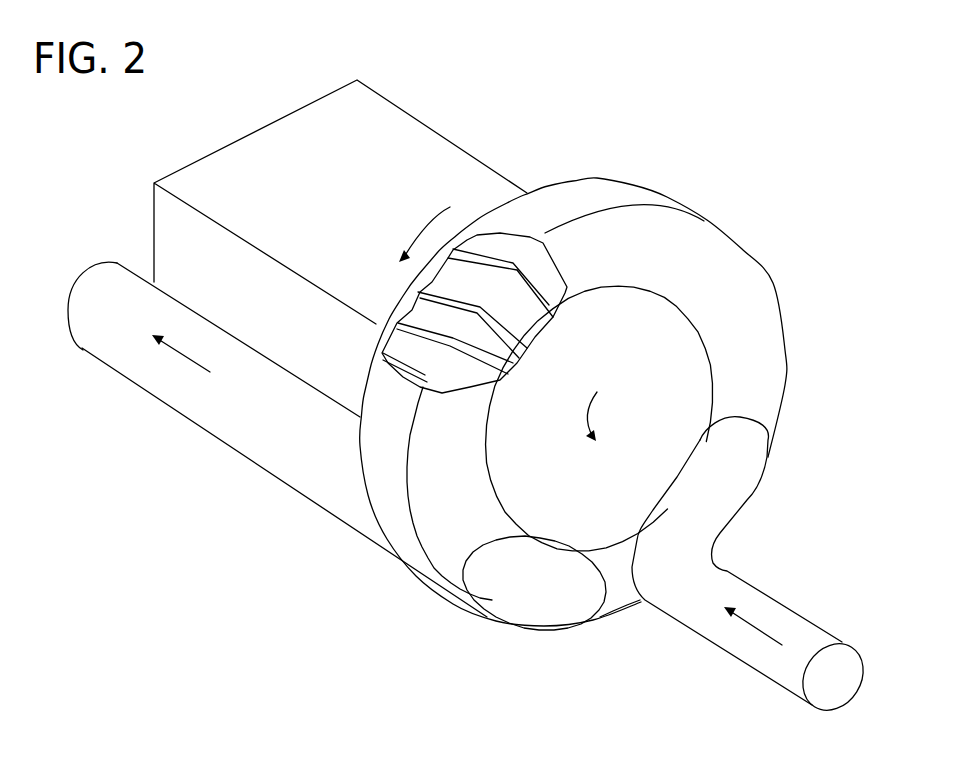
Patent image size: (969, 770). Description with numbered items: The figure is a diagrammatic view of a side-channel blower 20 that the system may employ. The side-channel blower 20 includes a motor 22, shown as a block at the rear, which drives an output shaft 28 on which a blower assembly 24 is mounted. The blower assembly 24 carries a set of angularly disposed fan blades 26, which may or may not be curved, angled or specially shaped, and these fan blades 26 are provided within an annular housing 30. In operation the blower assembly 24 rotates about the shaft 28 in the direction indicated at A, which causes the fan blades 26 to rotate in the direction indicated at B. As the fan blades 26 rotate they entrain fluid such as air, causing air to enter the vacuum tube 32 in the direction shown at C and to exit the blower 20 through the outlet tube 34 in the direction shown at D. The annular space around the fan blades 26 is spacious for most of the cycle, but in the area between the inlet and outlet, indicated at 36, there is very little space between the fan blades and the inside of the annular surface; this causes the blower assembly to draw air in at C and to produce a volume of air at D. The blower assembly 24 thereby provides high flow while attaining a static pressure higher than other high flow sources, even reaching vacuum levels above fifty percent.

The side-channel blower 20 is at (716, 110).
The motor 22 is at (441, 132).
The blower assembly 24 is at (379, 295).
The fan blades 26 is at (537, 290).
The output shaft 28 is at (606, 416).
The annular housing 30 is at (767, 279).
The vacuum tube 32 is at (775, 598).
The outlet tube 34 is at (270, 472).
The area between the inlet and outlet 36 is at (633, 606).